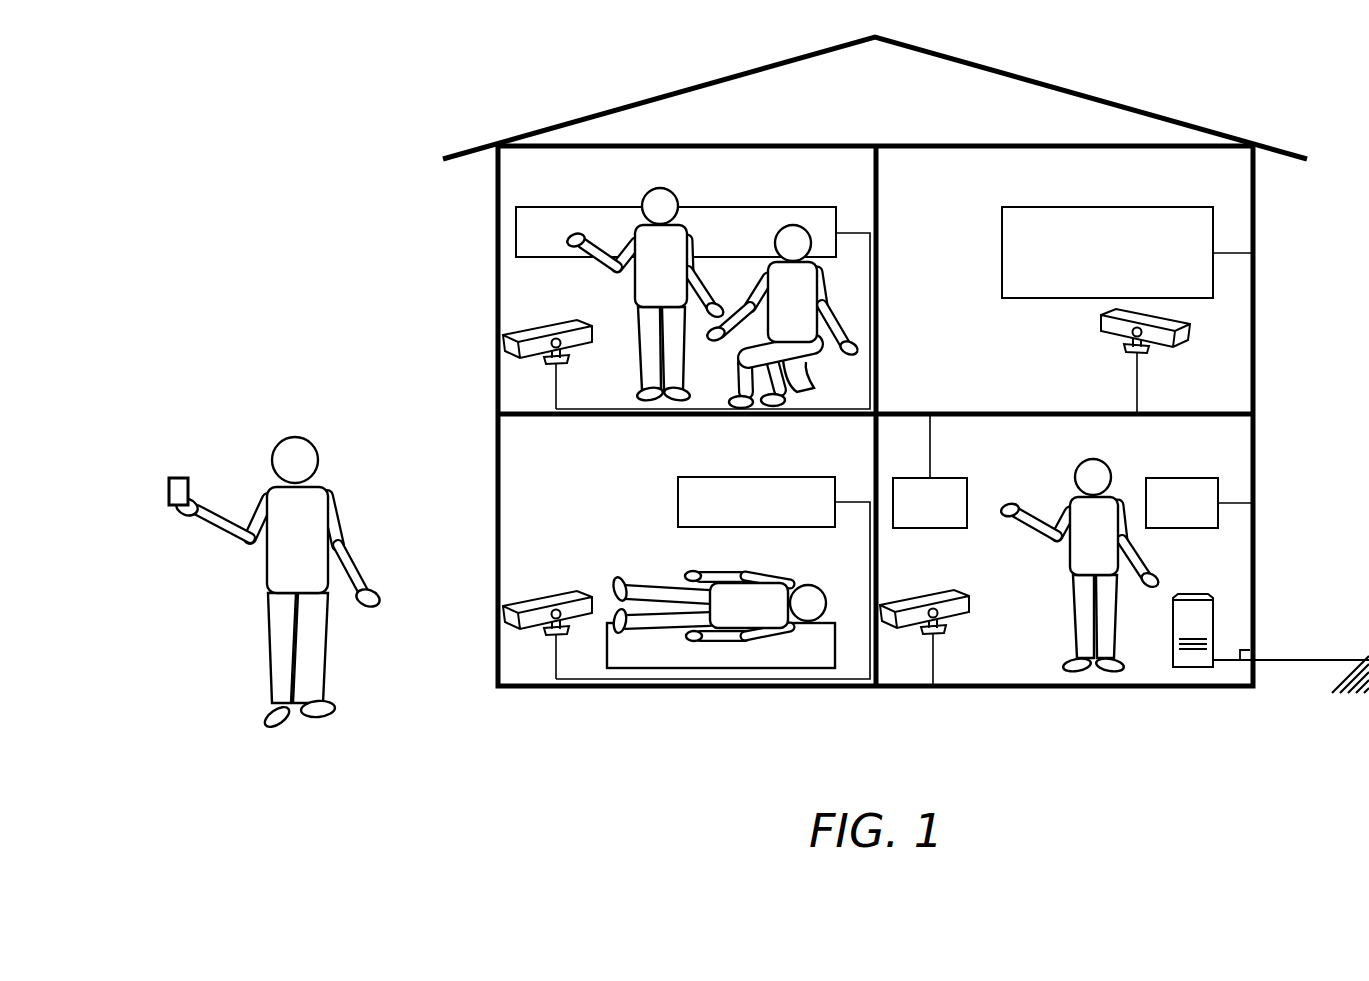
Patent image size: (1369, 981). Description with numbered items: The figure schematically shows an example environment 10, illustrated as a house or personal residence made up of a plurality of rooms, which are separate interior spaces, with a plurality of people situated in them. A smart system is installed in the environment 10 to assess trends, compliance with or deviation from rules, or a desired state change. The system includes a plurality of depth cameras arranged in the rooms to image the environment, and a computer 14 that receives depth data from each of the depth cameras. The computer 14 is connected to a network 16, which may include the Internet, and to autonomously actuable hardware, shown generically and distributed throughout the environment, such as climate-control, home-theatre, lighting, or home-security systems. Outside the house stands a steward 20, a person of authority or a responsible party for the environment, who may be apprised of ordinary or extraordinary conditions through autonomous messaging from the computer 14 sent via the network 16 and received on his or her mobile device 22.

The environment 10 is at (297, 148).
The computer 14 is at (1182, 628).
The network 16 is at (1337, 654).
The steward 20 is at (284, 546).
The mobile device 22 is at (168, 491).